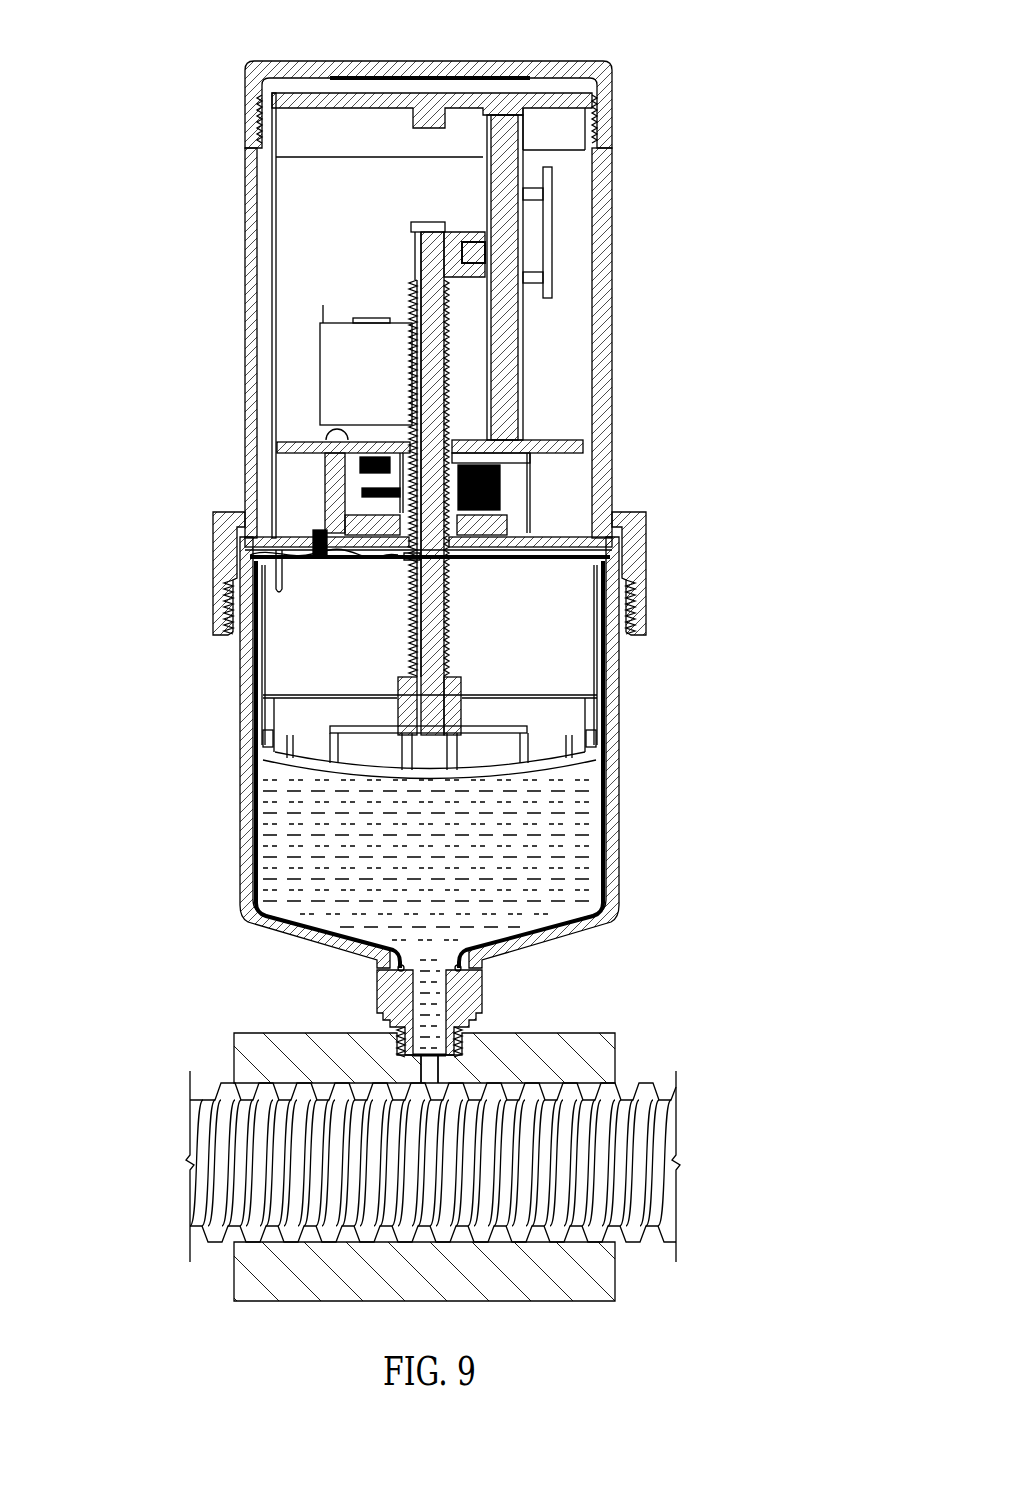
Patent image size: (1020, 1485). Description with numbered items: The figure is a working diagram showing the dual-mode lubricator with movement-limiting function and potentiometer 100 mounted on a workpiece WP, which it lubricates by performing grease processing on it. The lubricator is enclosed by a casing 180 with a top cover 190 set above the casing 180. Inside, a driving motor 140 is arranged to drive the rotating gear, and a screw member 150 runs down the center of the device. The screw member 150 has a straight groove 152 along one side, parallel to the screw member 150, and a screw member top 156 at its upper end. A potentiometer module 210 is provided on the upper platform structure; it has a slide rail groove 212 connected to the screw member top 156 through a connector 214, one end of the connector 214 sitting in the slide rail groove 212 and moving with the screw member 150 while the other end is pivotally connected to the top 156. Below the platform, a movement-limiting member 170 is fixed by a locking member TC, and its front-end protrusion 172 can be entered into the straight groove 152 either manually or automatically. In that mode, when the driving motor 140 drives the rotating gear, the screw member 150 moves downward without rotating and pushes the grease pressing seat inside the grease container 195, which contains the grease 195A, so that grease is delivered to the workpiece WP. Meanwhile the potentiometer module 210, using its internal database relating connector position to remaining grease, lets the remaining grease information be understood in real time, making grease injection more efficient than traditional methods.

The dual-mode lubricator with movement-limiting function and potentiometer 100 is at (653, 248).
The top cover 190 is at (612, 103).
The casing 180 is at (605, 330).
The potentiometer module 210 is at (520, 240).
The slide rail groove 212 is at (481, 243).
The connector 214 is at (455, 230).
The screw member top 156 is at (421, 218).
The straight groove 152 is at (413, 290).
The screw member 150 is at (440, 394).
The driving motor 140 is at (350, 362).
The locking member TC is at (315, 545).
The movement-limiting member 170 is at (282, 586).
The protrusion 172 is at (410, 562).
The grease container 195 is at (265, 752).
The grease 195A is at (295, 848).
The workpiece WP is at (627, 1130).